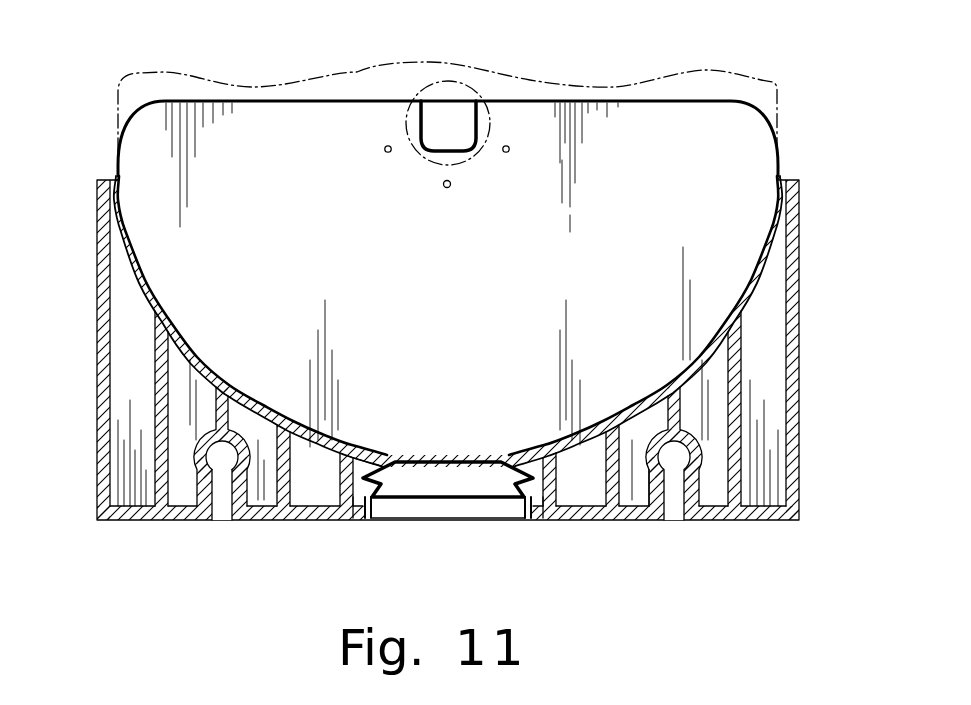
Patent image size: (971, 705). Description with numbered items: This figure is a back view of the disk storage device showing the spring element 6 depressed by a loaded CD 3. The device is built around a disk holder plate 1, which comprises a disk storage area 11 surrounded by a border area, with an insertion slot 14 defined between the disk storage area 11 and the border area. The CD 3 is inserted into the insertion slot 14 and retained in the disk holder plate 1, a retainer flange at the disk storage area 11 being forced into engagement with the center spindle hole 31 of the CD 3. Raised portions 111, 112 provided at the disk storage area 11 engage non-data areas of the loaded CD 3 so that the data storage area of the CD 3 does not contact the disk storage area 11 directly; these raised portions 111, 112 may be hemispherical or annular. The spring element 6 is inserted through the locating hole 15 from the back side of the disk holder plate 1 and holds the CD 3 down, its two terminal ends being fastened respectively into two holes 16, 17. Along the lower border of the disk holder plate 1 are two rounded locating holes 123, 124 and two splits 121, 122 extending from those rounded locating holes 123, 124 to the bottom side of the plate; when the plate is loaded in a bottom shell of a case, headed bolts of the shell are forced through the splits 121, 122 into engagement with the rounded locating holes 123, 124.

The disk holder plate 1 is at (103, 168).
The CD 3 is at (668, 90).
The spring element 6 is at (430, 466).
The disk storage area 11 is at (742, 134).
The insertion slot 14 is at (382, 446).
The locating hole 15 is at (505, 455).
The hole 16 is at (527, 528).
The hole 17 is at (368, 528).
The center spindle hole 31 is at (448, 81).
The raised portion 111 is at (386, 146).
The raised portion 112 is at (510, 148).
The split 121 is at (226, 495).
The split 122 is at (675, 494).
The rounded locating hole 123 is at (199, 493).
The rounded locating hole 124 is at (651, 494).